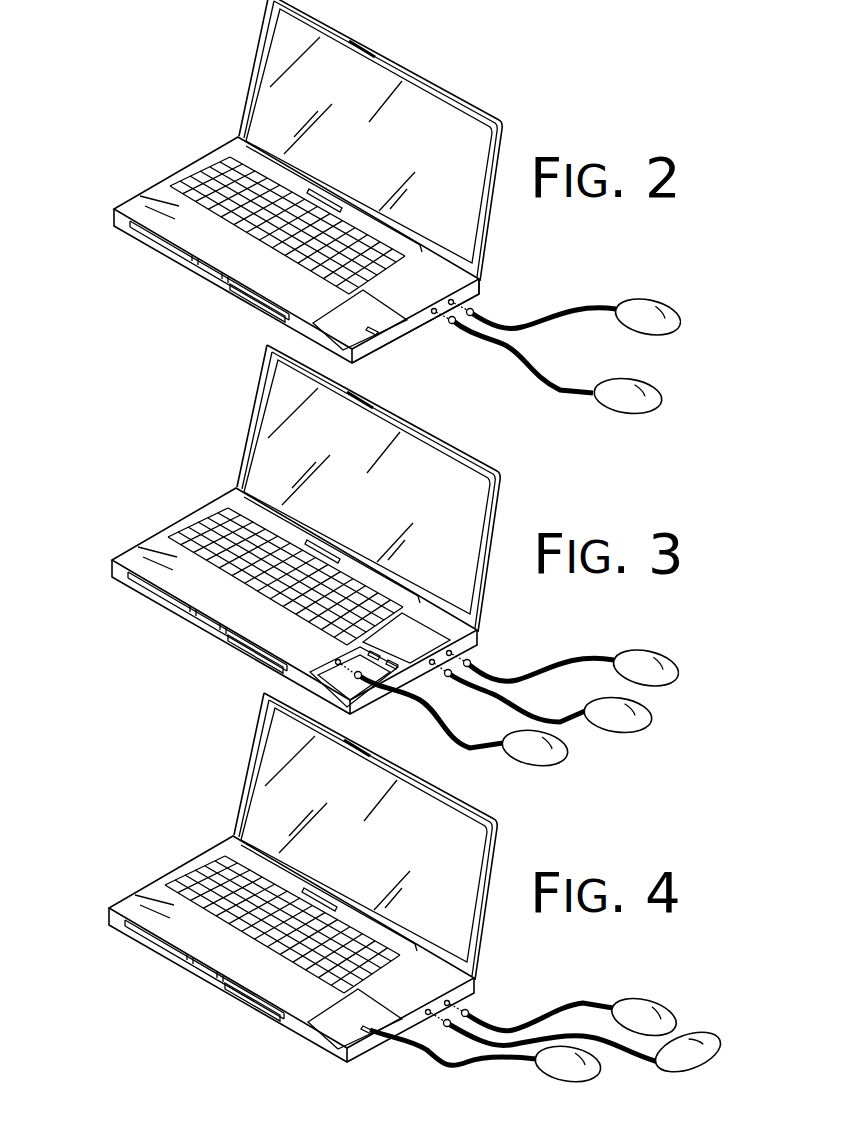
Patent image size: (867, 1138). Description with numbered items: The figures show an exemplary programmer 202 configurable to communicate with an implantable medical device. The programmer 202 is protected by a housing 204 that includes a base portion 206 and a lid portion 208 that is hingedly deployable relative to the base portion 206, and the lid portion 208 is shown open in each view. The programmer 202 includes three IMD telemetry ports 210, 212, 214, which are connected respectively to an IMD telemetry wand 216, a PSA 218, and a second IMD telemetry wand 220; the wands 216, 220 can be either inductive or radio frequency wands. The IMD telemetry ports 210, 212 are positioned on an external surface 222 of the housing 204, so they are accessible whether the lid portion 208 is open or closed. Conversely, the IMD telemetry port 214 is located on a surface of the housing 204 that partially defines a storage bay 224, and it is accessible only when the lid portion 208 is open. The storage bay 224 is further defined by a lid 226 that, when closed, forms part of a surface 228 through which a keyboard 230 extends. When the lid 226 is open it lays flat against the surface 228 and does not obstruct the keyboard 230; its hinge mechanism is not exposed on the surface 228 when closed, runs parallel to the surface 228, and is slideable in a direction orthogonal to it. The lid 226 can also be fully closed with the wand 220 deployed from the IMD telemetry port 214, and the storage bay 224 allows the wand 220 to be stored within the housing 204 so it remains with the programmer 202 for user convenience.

In FIG. 2, the programmer 202 is at (330, 181).
In FIG. 3, the programmer 202 is at (358, 541).
In FIG. 4, the programmer 202 is at (368, 877).
In FIG. 2, the housing 204 is at (330, 181).
In FIG. 3, the housing 204 is at (337, 541).
In FIG. 4, the housing 204 is at (337, 877).
In FIG. 2, the base portion 206 is at (289, 235).
In FIG. 3, the base portion 206 is at (253, 597).
In FIG. 4, the base portion 206 is at (258, 940).
In FIG. 2, the lid portion 208 is at (292, 140).
In FIG. 3, the lid portion 208 is at (250, 410).
In FIG. 4, the lid portion 208 is at (286, 836).
In FIG. 2, the IMD telemetry port 210 is at (481, 303).
In FIG. 2, the IMD telemetry port 212 is at (425, 333).
In FIG. 3, the IMD telemetry port 214 is at (335, 660).
In FIG. 2, the IMD telemetry wand 216 is at (598, 303).
In FIG. 3, the IMD telemetry wand 216 is at (663, 652).
In FIG. 4, the IMD telemetry wand 216 is at (612, 1007).
In FIG. 2, the PSA 218 is at (576, 365).
In FIG. 3, the PSA 218 is at (655, 723).
In FIG. 4, the PSA 218 is at (599, 1055).
In FIG. 3, the IMD telemetry wand 220 is at (568, 753).
In FIG. 4, the IMD telemetry wand 220 is at (514, 1068).
In FIG. 2, the external surface 222 is at (441, 318).
In FIG. 3, the storage bay 224 is at (353, 688).
In FIG. 2, the lid 226 is at (360, 320).
In FIG. 3, the lid 226 is at (420, 646).
In FIG. 4, the lid 226 is at (355, 1019).
In FIG. 2, the surface 228 is at (296, 243).
In FIG. 3, the surface 228 is at (245, 616).
In FIG. 3, the keyboard 230 is at (198, 523).